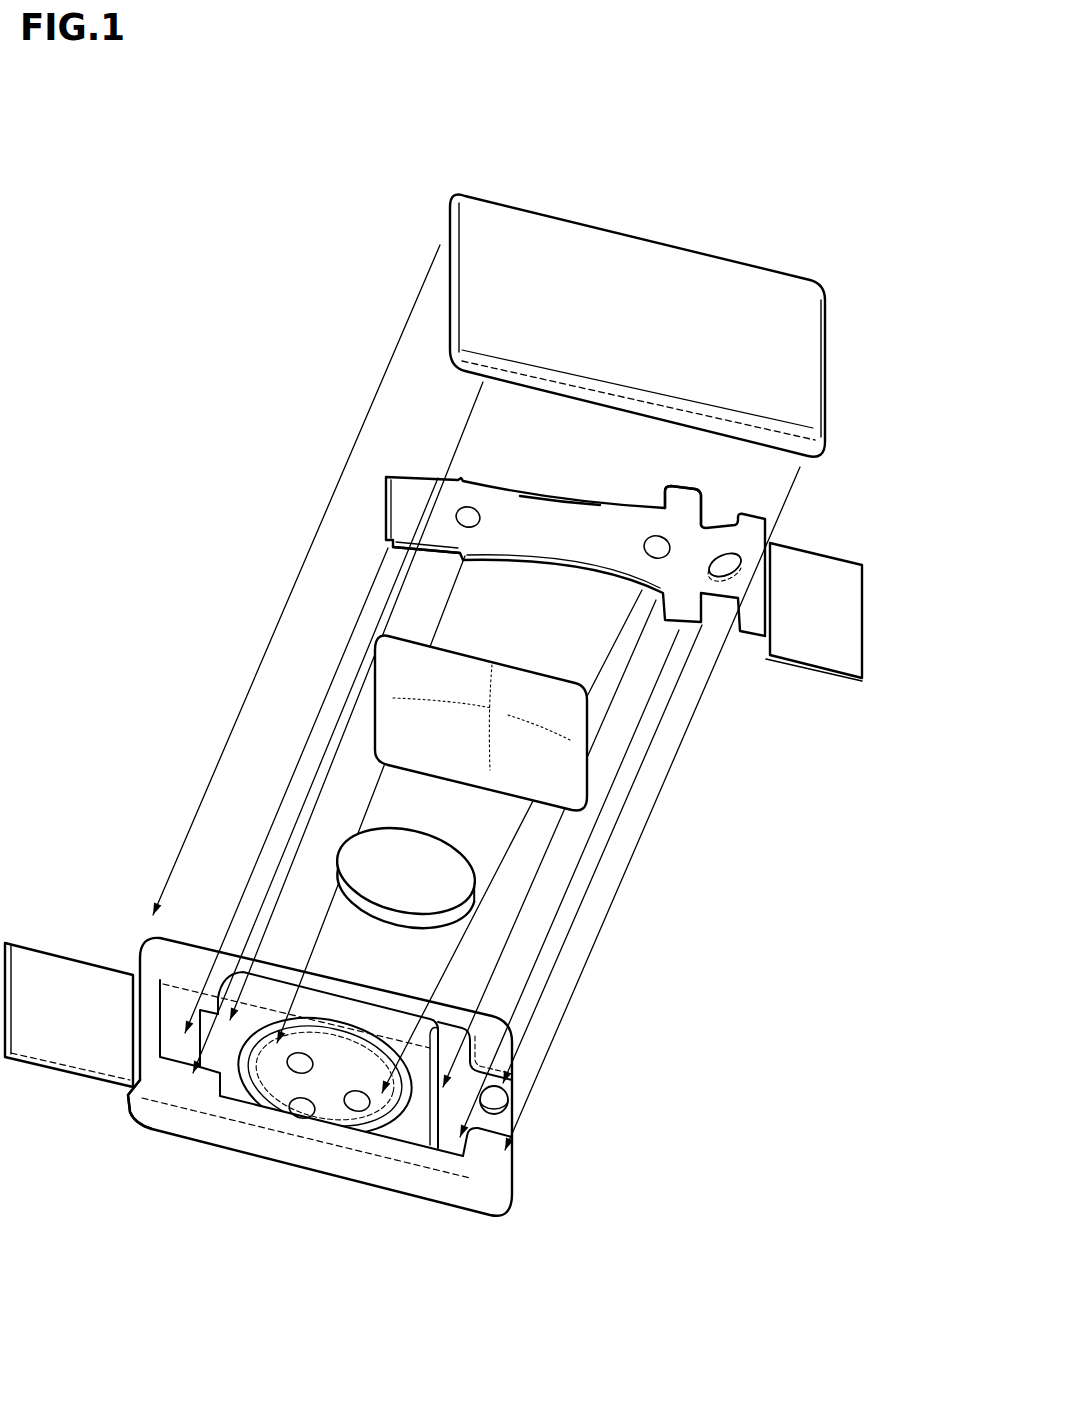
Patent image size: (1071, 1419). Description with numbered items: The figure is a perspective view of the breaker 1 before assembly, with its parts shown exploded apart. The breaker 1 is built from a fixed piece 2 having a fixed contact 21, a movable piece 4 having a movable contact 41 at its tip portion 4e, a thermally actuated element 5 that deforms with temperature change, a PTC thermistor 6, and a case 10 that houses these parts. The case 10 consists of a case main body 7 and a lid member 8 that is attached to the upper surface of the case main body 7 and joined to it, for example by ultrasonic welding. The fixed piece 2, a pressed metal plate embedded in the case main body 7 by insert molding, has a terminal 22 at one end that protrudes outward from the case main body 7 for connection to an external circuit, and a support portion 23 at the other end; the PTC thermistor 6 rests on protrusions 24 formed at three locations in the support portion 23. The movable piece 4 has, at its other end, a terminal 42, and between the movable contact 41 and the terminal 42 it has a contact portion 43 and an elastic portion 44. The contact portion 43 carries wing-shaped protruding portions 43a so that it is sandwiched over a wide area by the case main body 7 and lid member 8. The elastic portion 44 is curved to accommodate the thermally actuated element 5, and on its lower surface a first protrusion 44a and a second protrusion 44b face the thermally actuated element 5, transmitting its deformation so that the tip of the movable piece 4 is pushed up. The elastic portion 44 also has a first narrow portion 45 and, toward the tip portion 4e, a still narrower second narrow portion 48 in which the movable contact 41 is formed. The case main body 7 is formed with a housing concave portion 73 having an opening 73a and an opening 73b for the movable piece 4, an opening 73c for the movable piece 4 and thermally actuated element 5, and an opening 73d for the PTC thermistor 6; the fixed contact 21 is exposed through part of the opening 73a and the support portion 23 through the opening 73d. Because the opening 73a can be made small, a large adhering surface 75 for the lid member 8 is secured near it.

The breaker 1 is at (850, 160).
The fixed piece 2 is at (70, 950).
The movable piece 4 is at (796, 667).
The tip portion 4e is at (385, 500).
The thermally actuated element 5 is at (410, 730).
The PTC thermistor 6 is at (375, 855).
The case main body 7 is at (347, 1167).
The lid member 8 is at (662, 288).
The case 10 is at (451, 740).
The fixed contact 21 is at (160, 1093).
The terminal 22 is at (62, 1030).
The support portion 23 is at (295, 1115).
The protrusions 24 is at (300, 1053).
The movable contact 41 is at (403, 552).
The terminal 42 is at (822, 572).
The contact portion 43 is at (690, 525).
The protruding portions 43a is at (668, 593).
The elastic portion 44 is at (540, 512).
The first protrusion 44a is at (655, 538).
The second protrusion 44b is at (470, 518).
The first narrow portion 45 is at (567, 532).
The second narrow portion 48 is at (410, 495).
The housing concave portion 73 is at (200, 1080).
The opening 73a is at (175, 1008).
The opening 73b is at (467, 1110).
The opening 73c is at (422, 1131).
The opening 73d is at (332, 1108).
The adhering surface 75 is at (238, 1093).